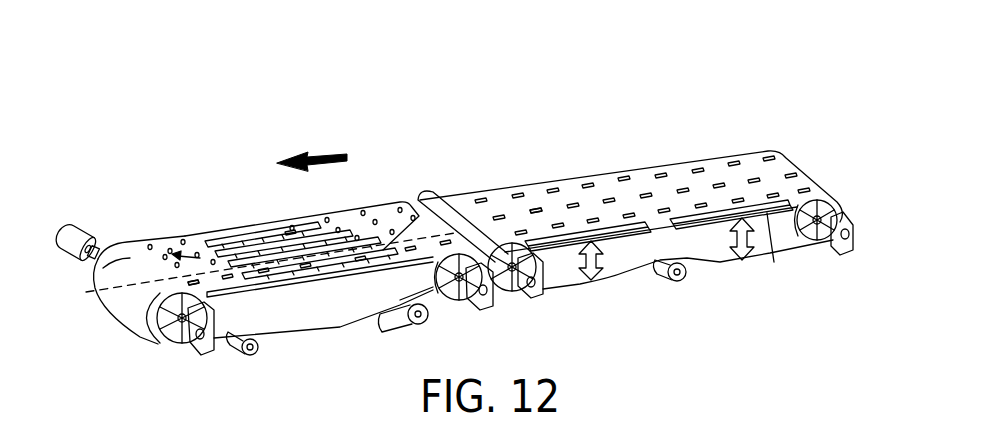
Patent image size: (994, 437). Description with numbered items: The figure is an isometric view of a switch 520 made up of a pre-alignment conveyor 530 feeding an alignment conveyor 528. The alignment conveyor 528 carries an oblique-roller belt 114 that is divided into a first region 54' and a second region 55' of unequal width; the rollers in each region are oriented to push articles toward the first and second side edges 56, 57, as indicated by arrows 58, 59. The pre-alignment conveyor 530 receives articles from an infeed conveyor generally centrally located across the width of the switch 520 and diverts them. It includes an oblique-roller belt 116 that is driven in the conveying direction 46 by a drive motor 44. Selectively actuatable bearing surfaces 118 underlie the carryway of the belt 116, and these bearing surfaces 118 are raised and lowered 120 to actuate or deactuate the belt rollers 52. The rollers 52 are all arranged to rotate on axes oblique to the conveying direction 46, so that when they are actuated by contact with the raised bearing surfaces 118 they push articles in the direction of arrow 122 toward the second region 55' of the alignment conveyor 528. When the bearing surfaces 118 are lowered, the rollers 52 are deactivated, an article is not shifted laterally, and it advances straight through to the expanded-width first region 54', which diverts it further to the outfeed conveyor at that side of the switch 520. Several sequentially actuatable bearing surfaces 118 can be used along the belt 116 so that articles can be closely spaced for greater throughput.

The switch 520 is at (316, 62).
The alignment conveyor 528 is at (400, 172).
The pre-alignment conveyor 530 is at (758, 127).
The conveying direction 46 is at (322, 157).
The drive motor 44 is at (427, 193).
The belt rollers 52 is at (804, 186).
The first region 54' is at (73, 254).
The second region 55' is at (168, 328).
The first side edge 56 is at (352, 208).
The second side edge 57 is at (307, 284).
The arrow 58 is at (183, 258).
The arrow 59 is at (209, 277).
The oblique-roller belt 114 is at (303, 225).
The oblique-roller belt 116 is at (702, 163).
The selectively actuatable bearing surfaces 118 is at (614, 235).
The raising and lowering 120 is at (586, 258).
The direction of arrow 122 is at (531, 238).